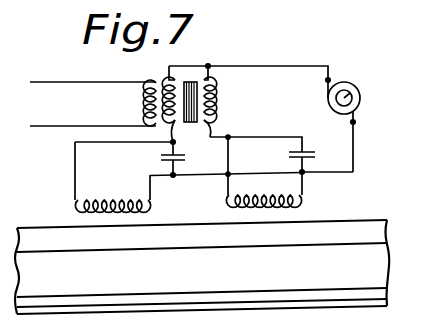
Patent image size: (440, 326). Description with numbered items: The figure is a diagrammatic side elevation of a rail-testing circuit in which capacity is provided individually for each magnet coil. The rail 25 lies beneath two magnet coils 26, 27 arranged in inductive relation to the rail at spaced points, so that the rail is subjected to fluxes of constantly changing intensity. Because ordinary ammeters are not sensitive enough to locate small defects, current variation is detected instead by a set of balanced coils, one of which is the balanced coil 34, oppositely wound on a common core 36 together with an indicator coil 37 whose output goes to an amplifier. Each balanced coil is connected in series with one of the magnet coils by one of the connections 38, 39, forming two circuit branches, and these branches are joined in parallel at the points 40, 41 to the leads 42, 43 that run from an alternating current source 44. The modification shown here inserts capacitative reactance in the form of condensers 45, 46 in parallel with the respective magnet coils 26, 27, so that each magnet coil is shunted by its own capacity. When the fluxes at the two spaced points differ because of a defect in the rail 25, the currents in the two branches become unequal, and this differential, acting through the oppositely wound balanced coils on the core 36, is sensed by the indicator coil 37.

The rail 25 is at (202, 267).
The magnet coil 26 is at (113, 201).
The magnet coil 27 is at (262, 197).
The balanced coil 34 is at (181, 108).
The core 36 is at (201, 126).
The indicator coil 37 is at (138, 109).
The connection 38 is at (100, 143).
The connection 39 is at (217, 100).
The parallel connection point 40 is at (208, 65).
The parallel connection point 41 is at (306, 162).
The lead 42 is at (305, 66).
The lead 43 is at (333, 172).
The alternating current source 44 is at (355, 94).
The condenser 45 is at (161, 157).
The condenser 46 is at (300, 150).